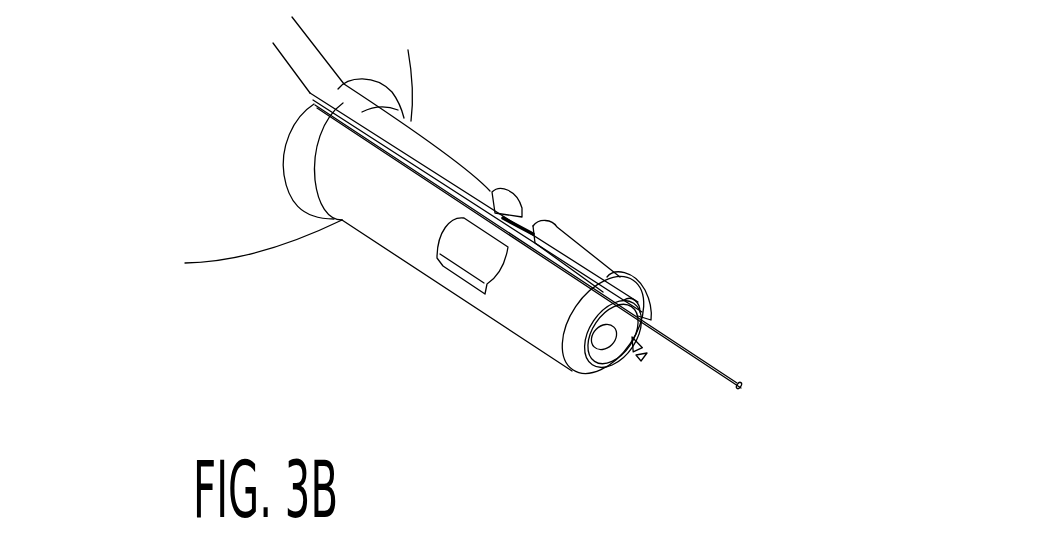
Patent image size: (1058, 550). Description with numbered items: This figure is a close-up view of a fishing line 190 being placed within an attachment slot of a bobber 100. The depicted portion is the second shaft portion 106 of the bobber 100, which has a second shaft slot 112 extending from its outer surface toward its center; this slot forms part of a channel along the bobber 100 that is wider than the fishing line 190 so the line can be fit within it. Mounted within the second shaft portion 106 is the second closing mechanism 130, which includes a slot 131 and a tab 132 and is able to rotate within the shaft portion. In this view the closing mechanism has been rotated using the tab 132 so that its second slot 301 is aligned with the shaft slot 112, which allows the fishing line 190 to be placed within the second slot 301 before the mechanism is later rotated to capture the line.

The bobber 100 is at (238, 334).
The second shaft portion 106 is at (440, 147).
The second shaft slot 112 is at (578, 263).
The second closing mechanism 130 is at (638, 350).
The slot 131 is at (602, 348).
The tab 132 is at (463, 257).
The fishing line 190 is at (694, 352).
The second slot 301 is at (652, 319).